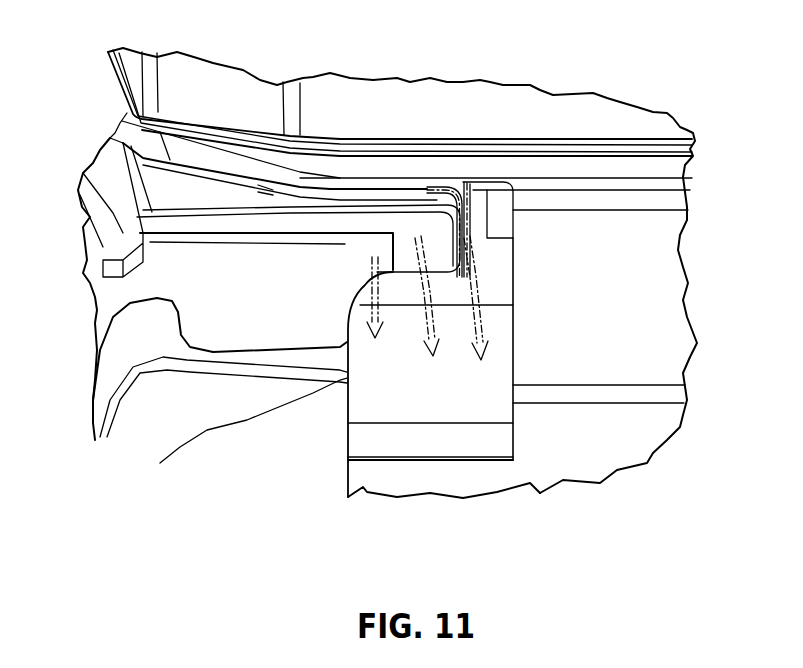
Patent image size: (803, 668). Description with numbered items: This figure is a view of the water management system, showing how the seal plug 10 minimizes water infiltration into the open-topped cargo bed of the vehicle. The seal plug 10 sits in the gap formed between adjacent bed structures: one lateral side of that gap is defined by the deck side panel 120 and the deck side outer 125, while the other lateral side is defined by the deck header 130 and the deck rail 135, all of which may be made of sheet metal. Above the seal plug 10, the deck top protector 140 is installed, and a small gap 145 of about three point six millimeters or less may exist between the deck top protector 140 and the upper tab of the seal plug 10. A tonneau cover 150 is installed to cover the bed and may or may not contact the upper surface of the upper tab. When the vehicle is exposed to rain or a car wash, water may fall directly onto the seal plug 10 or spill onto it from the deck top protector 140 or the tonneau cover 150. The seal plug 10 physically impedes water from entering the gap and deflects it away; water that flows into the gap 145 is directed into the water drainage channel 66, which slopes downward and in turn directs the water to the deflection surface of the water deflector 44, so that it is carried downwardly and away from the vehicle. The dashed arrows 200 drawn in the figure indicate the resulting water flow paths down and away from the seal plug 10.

The seal plug 10 is at (508, 462).
The water deflector 44 is at (360, 407).
The water drainage channel 66 is at (463, 241).
The deck side panel 120 is at (207, 423).
The deck side outer 125 is at (123, 298).
The deck header 130 is at (474, 488).
The deck rail 135 is at (666, 255).
The deck top protector 140 is at (140, 210).
The gap 145 is at (457, 168).
The tonneau cover 150 is at (263, 87).
The water drainage path 200 is at (375, 303).